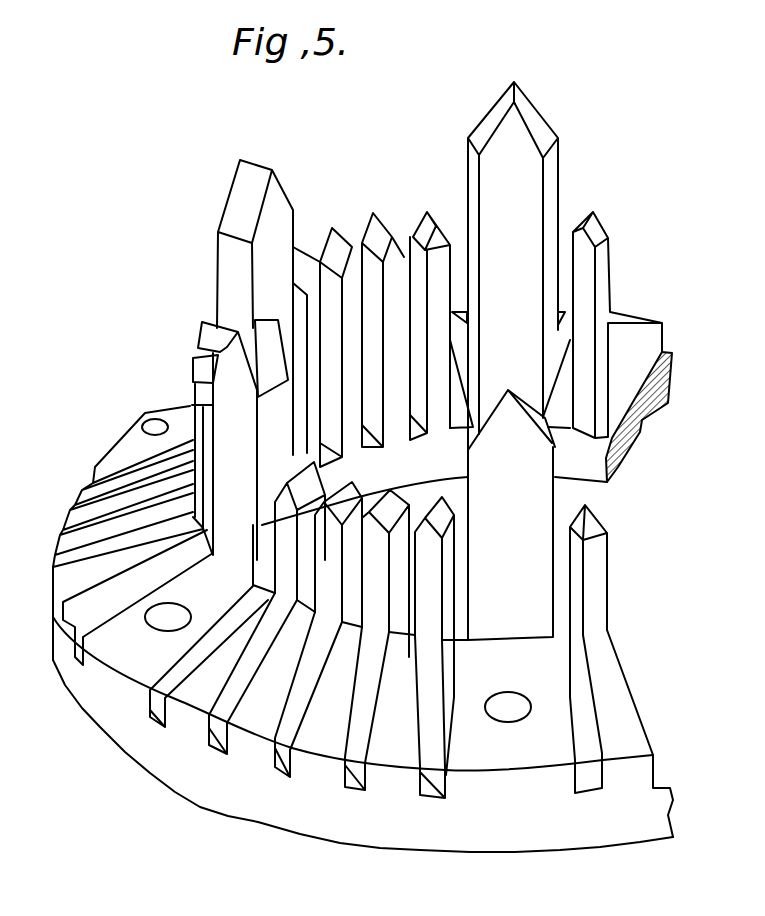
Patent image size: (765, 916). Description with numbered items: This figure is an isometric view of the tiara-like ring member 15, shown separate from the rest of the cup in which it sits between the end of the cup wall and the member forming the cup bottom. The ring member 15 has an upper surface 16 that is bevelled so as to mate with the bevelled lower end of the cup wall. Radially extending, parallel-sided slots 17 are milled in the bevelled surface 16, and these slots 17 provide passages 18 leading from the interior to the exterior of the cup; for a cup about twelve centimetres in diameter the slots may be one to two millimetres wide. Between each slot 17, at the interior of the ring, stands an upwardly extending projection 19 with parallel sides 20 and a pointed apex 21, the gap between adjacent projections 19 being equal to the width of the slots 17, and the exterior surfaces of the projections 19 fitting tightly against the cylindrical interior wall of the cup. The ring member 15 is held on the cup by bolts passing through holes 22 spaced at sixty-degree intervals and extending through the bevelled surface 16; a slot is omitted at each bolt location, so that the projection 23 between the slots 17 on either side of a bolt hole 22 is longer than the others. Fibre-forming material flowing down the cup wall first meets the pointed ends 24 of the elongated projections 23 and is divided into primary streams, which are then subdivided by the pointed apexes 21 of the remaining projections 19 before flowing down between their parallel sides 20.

The tiara-like ring member 15 is at (118, 750).
The upper surface 16 is at (226, 726).
The slots 17 is at (365, 748).
The passages 18 is at (273, 750).
The projection 19 is at (600, 580).
The parallel sides 20 is at (359, 515).
The pointed apex 21 is at (419, 530).
The holes 22 is at (503, 692).
The projection 23 is at (556, 497).
The pointed ends 24 is at (513, 395).